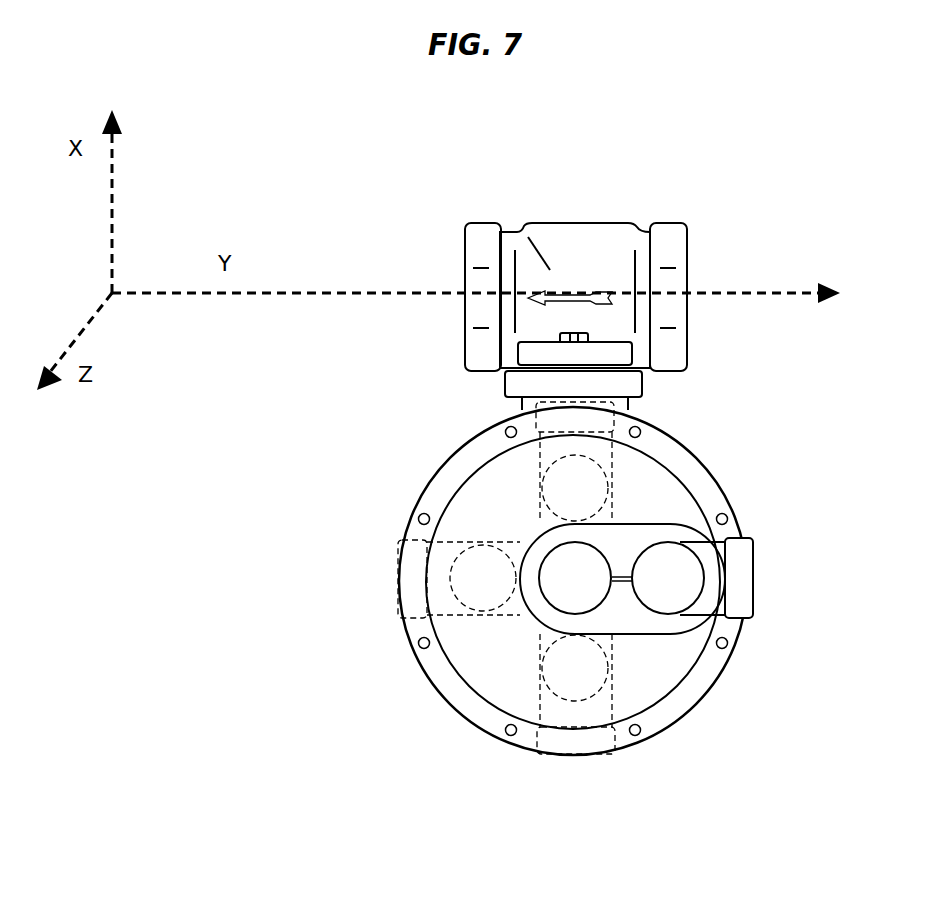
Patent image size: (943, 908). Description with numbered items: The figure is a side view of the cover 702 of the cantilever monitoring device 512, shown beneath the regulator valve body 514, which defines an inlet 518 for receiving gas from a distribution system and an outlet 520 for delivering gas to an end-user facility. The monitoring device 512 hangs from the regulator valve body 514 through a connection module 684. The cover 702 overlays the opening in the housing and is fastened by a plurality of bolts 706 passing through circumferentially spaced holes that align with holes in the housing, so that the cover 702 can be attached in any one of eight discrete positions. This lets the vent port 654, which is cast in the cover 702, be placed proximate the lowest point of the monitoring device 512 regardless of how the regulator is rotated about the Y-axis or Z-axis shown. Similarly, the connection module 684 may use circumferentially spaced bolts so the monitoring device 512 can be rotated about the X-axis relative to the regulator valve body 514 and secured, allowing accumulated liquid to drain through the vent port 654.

The cantilever monitoring device 512 is at (410, 753).
The regulator valve body 514 is at (602, 222).
The inlet 518 is at (478, 290).
The outlet 520 is at (683, 280).
The vent port 654 is at (518, 404).
The connection module 684 is at (642, 387).
The cover 702 is at (680, 488).
The bolts 706 is at (737, 641).